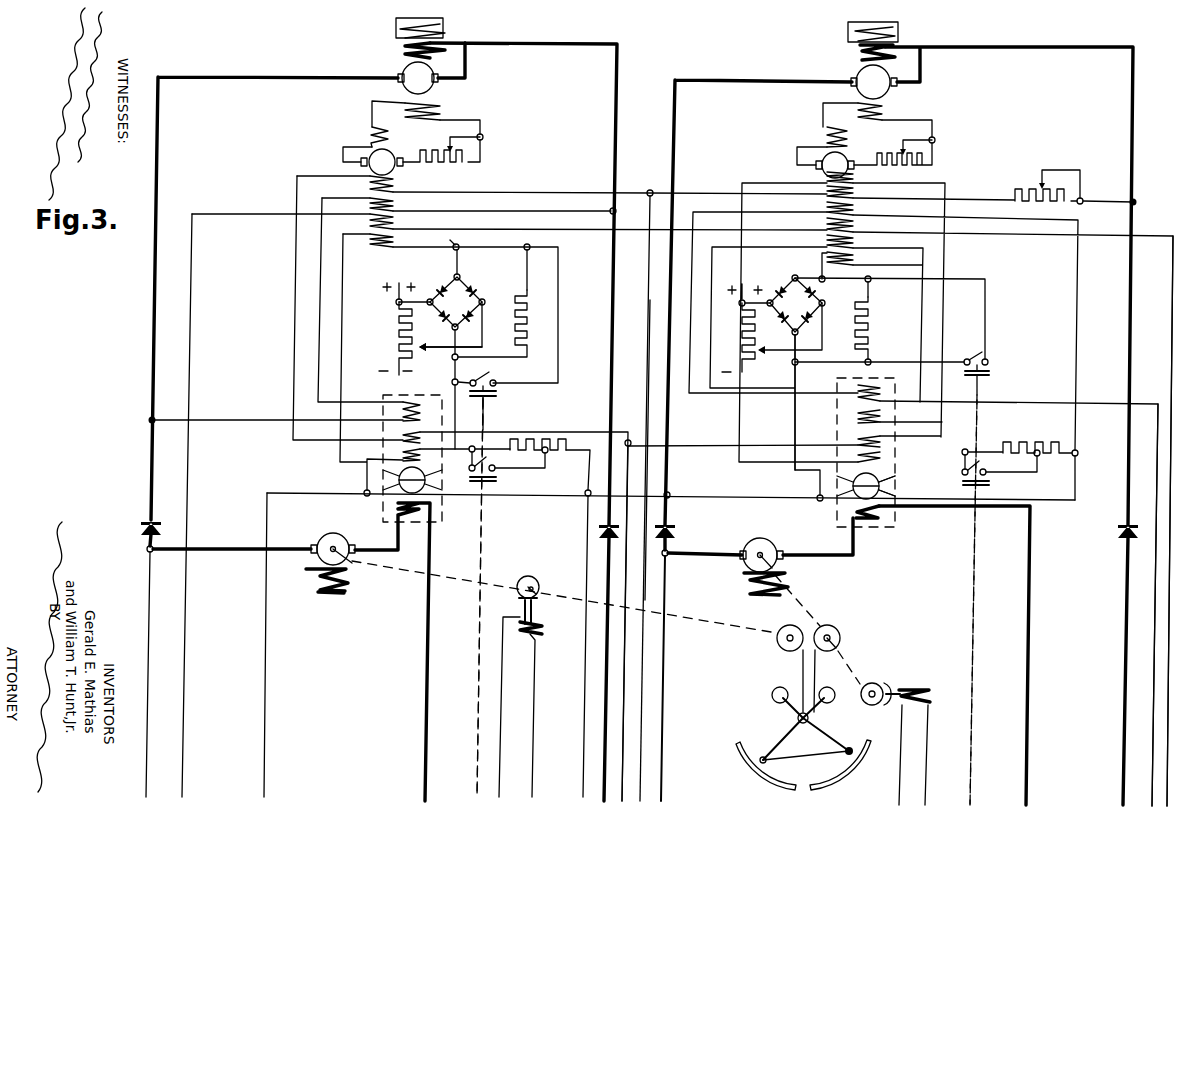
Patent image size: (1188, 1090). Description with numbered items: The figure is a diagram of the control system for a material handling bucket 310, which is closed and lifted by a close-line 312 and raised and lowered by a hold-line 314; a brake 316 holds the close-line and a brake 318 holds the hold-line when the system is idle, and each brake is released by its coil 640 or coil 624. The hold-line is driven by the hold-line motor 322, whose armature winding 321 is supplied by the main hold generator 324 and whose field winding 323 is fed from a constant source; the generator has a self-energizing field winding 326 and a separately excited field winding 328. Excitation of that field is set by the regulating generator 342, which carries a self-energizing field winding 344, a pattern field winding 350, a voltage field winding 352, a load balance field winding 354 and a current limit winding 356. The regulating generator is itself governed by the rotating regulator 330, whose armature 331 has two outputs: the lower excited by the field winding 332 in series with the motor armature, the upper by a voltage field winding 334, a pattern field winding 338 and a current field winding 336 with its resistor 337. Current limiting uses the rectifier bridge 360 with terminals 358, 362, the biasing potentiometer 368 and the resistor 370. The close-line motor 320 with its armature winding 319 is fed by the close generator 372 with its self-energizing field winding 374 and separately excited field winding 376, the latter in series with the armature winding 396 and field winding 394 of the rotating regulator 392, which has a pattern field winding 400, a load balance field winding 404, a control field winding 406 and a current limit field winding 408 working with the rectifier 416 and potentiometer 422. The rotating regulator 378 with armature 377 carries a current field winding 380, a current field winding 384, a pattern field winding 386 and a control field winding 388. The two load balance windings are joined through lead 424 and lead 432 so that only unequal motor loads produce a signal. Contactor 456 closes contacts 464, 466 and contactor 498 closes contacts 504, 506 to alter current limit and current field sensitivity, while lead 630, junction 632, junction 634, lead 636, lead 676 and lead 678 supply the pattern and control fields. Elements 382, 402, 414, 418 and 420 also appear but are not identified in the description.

The material handling bucket 310 is at (846, 766).
The close-line 312 is at (828, 653).
The hold-line 314 is at (802, 665).
The brake 316 is at (872, 682).
The brake 318 is at (541, 573).
The armature winding of close-line motor 319 is at (763, 543).
The close-line motor 320 is at (790, 578).
The armature winding of hold motor 321 is at (327, 535).
The hold-line motor 322 is at (356, 571).
The field winding of hold-line motor 323 is at (333, 602).
The main hold generator 324 is at (476, 99).
The self-energizing field winding 326 is at (432, 50).
The separately excited field winding 328 is at (440, 112).
The rotating regulator 330 is at (363, 491).
The armature of rotating regulator 331 is at (463, 492).
The field winding 332 is at (397, 510).
The voltage field winding 334 is at (424, 399).
The current field winding 336 is at (430, 460).
The resistor 337 is at (556, 442).
The pattern field winding 338 is at (430, 440).
The regulating generator 342 is at (366, 168).
The self-energizing field winding 344 is at (370, 133).
The pattern field winding 350 is at (401, 181).
The voltage field winding 352 is at (401, 201).
The load balance field winding 354 is at (401, 219).
The current limit winding 356 is at (401, 237).
The terminal 358 is at (472, 239).
The rectifier bridge 360 is at (456, 292).
The terminal 362 is at (447, 327).
The potentiometer 368 is at (399, 333).
The resistor 370 is at (527, 310).
The close generator 372 is at (855, 90).
The self-energizing field winding 374 is at (893, 53).
The separately excited field winding 376 is at (882, 113).
The armature of rotating regulator 377 is at (836, 487).
The rotating regulator 378 is at (926, 492).
The current field winding 380 is at (861, 522).
The relay winding 382 is at (887, 419).
The current field winding 384 is at (887, 457).
The pattern field winding 386 is at (887, 441).
The control field winding 388 is at (887, 388).
The rotating regulator 392 is at (823, 176).
The field winding 394 is at (827, 136).
The armature winding 396 is at (860, 174).
The pattern field winding 400 is at (860, 193).
The winding 402 is at (860, 209).
The load balance field winding 404 is at (860, 227).
The control field winding 406 is at (860, 243).
The current limit field winding 408 is at (860, 262).
The rectifier bridge terminal 414 is at (800, 271).
The rectifier 416 is at (812, 310).
The resistor 418 is at (868, 322).
The conductor 420 is at (797, 362).
The potentiometer 422 is at (744, 367).
The lead 424 is at (184, 673).
The lead 432 is at (265, 725).
The contactor 456 is at (477, 752).
The contacts 464 is at (492, 466).
The contacts 466 is at (494, 396).
The contactor 498 is at (977, 600).
The contacts 504 is at (986, 467).
The contacts 506 is at (981, 378).
The coil of brake 624 is at (537, 707).
The lead 630 is at (644, 698).
The junction 632 is at (649, 192).
The junction 634 is at (630, 440).
The lead 636 is at (626, 734).
The coil of brake 640 is at (914, 688).
The lead 676 is at (1150, 239).
The lead 678 is at (1152, 403).